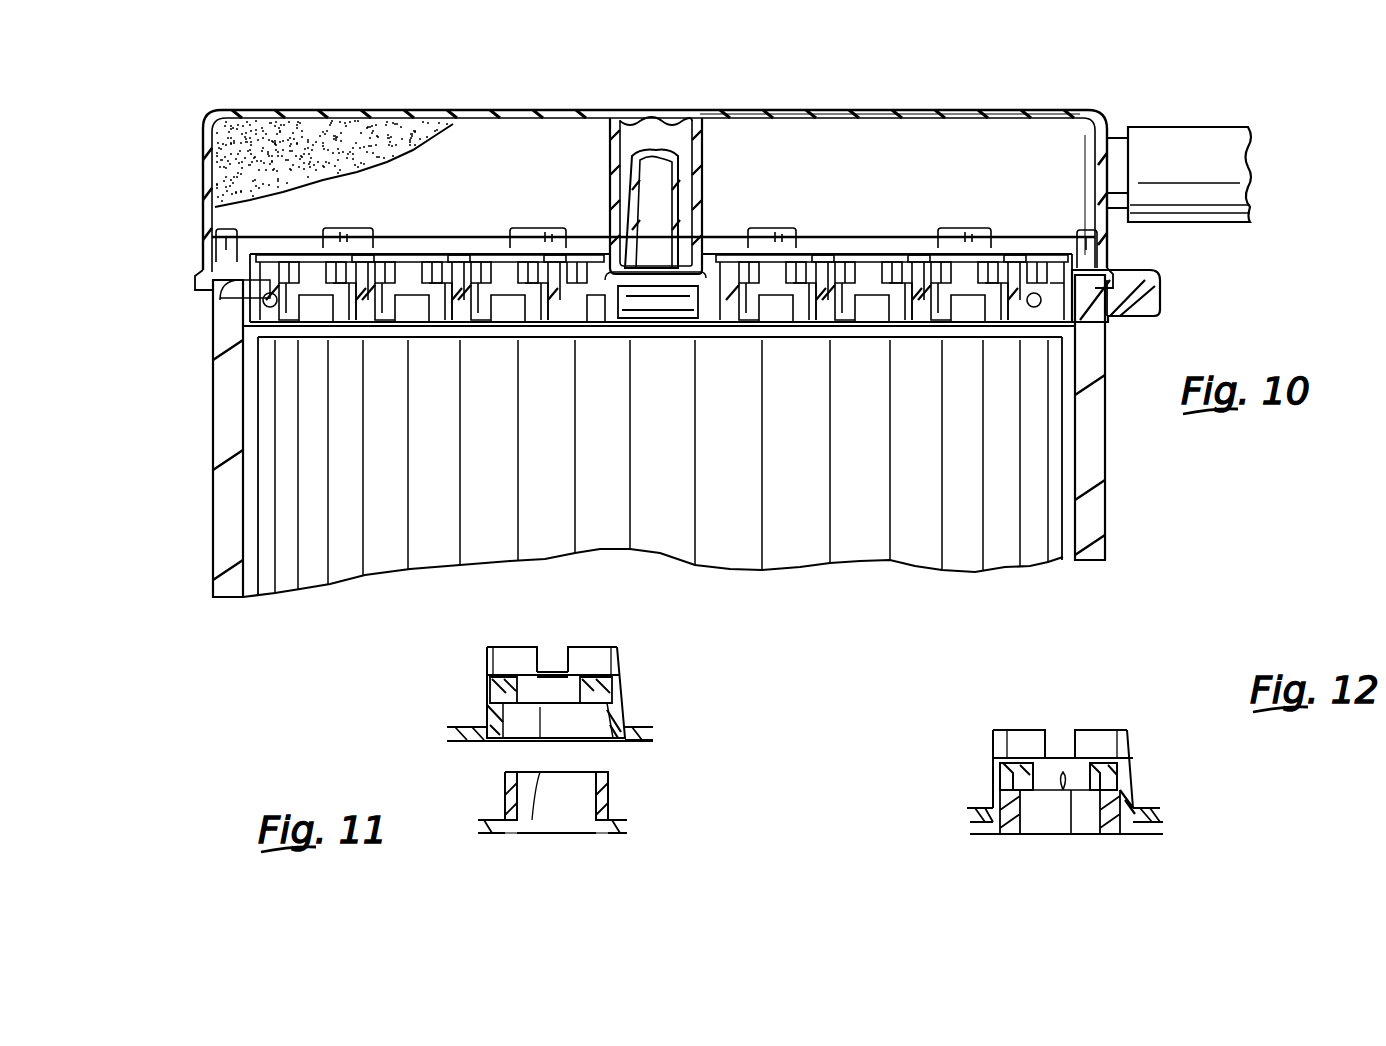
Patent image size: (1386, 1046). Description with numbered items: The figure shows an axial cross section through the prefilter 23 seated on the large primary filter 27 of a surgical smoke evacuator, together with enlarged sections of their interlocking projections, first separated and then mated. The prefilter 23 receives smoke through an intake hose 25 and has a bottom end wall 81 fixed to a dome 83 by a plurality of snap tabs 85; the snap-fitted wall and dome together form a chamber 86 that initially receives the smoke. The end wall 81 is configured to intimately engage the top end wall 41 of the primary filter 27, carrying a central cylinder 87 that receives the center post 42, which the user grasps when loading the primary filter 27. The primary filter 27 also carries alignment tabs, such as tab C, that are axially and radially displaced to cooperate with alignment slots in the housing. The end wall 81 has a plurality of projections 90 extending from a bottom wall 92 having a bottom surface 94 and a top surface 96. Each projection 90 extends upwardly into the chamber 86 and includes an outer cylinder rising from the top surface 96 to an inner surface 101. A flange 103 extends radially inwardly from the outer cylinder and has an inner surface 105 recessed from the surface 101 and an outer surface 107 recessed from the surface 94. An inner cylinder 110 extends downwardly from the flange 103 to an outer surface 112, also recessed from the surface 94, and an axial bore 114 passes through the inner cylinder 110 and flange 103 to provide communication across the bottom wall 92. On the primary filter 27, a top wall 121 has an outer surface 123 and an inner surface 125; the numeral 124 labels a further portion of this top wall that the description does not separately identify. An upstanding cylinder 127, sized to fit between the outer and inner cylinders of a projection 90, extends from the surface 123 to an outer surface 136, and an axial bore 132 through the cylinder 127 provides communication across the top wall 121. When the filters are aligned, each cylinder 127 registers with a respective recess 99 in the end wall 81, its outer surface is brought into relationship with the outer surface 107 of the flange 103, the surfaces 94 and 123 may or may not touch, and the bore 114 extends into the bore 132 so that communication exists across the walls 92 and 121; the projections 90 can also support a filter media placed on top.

In FIG. 10, the prefilter 23 is at (195, 158).
In FIG. 10, the primary filter 27 is at (199, 378).
In FIG. 10, the bottom end wall 81 is at (492, 233).
In FIG. 10, the dome 83 is at (895, 108).
In FIG. 10, the snap tabs 85 is at (762, 245).
In FIG. 10, the chamber 86 is at (1024, 137).
In FIG. 10, the central cylinder 87 is at (697, 165).
In FIG. 10, the center post 42 is at (678, 202).
In FIG. 10, the intake hose 25 is at (1207, 138).
In FIG. 10, the tab C is at (1145, 272).
In FIG. 10, the top end wall 41 is at (549, 351).
In FIG. 11, the projections 90 is at (487, 676).
In FIG. 12, the projections 90 is at (993, 734).
In FIG. 11, the bottom wall 92 is at (652, 739).
In FIG. 12, the bottom wall 92 is at (1140, 794).
In FIG. 11, the bottom surface 94 is at (643, 750).
In FIG. 11, the top surface 96 is at (645, 718).
In FIG. 12, the top surface 96 is at (1143, 808).
In FIG. 11, the recess 99 is at (525, 742).
In FIG. 11, the inner surface 101 is at (582, 672).
In FIG. 12, the inner surface 101 is at (1111, 742).
In FIG. 11, the flange 103 is at (518, 675).
In FIG. 12, the flange 103 is at (1034, 765).
In FIG. 11, the inner surface 105 is at (517, 674).
In FIG. 12, the inner surface 105 is at (1017, 730).
In FIG. 11, the outer surface 107 is at (495, 704).
In FIG. 12, the outer surface 107 is at (998, 780).
In FIG. 11, the inner cylinder 110 is at (597, 697).
In FIG. 12, the inner cylinder 110 is at (1090, 763).
In FIG. 11, the outer surface 112 is at (580, 706).
In FIG. 12, the outer surface 112 is at (1065, 827).
In FIG. 11, the axial bore 114 is at (512, 714).
In FIG. 12, the axial bore 114 is at (985, 816).
In FIG. 12, the top wall 121 is at (1147, 834).
In FIG. 11, the outer surface 123 is at (618, 808).
In FIG. 11, the flange edge 124 is at (610, 833).
In FIG. 11, the inner surface 125 is at (602, 835).
In FIG. 12, the inner surface 125 is at (1135, 835).
In FIG. 11, the upstanding cylinder 127 is at (497, 794).
In FIG. 11, the axial bore 132 is at (575, 832).
In FIG. 12, the axial bore 132 is at (1077, 832).
In FIG. 11, the outer surface 136 is at (515, 833).
In FIG. 12, the outer surface 136 is at (1040, 822).